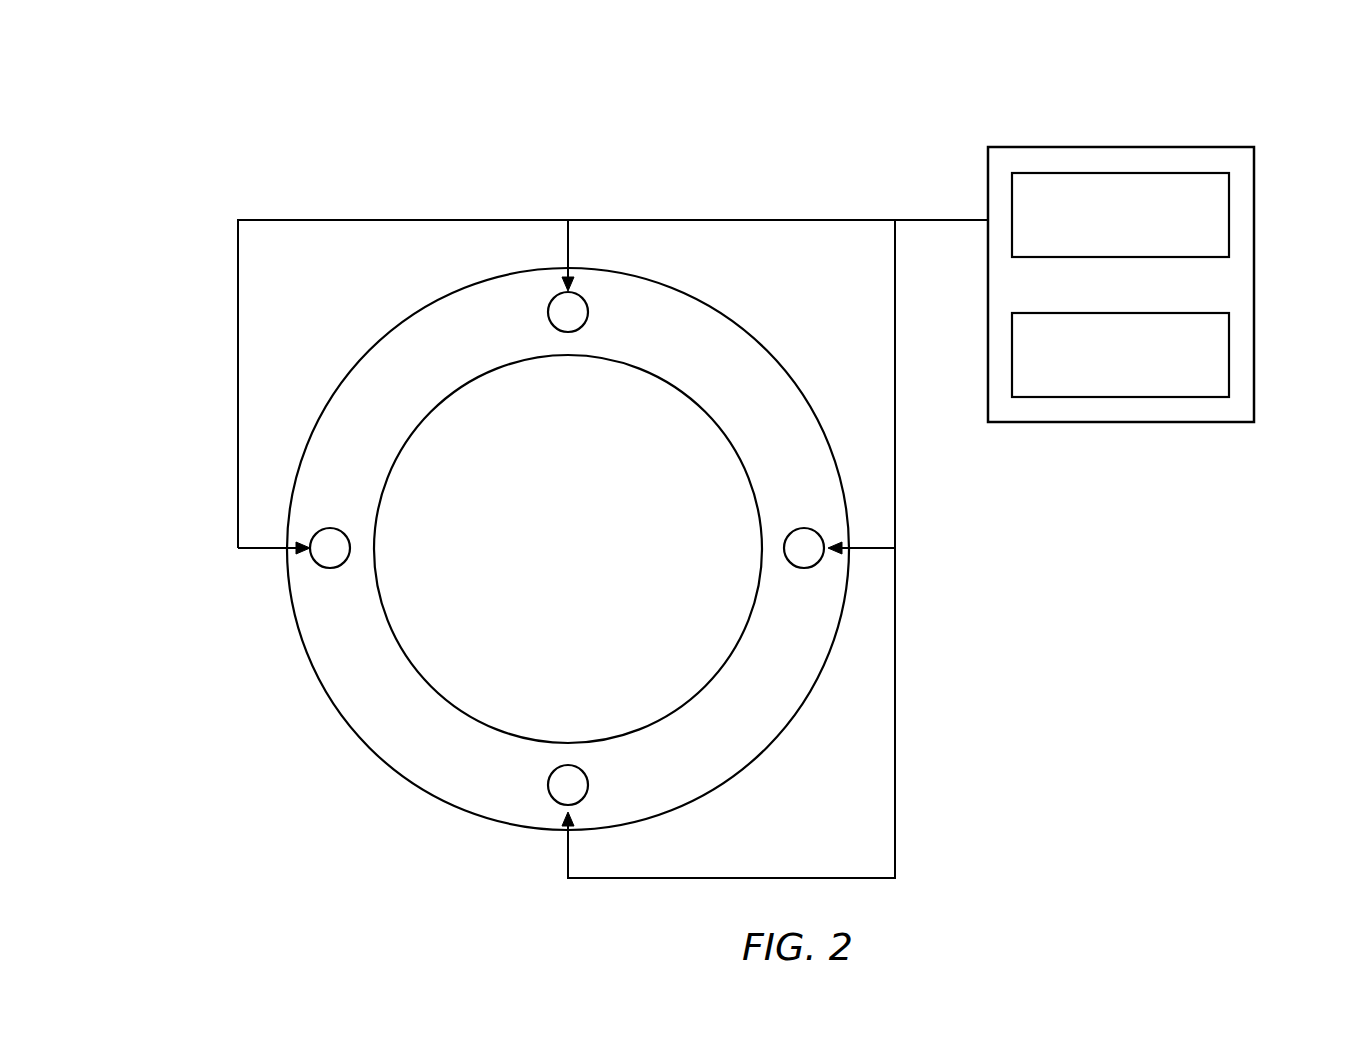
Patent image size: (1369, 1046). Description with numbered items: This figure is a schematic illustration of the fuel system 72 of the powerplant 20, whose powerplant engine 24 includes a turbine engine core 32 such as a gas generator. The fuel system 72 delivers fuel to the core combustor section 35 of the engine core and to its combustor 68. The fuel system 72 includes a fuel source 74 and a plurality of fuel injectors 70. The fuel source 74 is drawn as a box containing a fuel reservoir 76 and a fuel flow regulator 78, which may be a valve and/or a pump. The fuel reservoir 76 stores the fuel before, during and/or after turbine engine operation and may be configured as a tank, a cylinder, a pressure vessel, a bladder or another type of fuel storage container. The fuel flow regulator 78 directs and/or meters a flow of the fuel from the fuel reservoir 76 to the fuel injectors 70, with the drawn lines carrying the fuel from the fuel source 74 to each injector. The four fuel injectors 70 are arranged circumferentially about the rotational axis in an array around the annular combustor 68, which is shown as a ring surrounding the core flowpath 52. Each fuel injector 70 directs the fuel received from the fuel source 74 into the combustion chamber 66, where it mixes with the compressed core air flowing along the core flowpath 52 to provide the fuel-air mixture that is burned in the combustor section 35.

The powerplant 20 is at (590, 489).
The powerplant engine 24 is at (590, 489).
The turbine engine core 32 is at (590, 489).
The core combustor section 35 is at (740, 206).
The core flowpath 52 is at (568, 549).
The combustion chamber 66 is at (725, 400).
The combustor 68 is at (758, 323).
The fuel injectors 70 is at (589, 314).
The fuel system 72 is at (1168, 230).
The fuel source 74 is at (1255, 175).
The fuel reservoir 76 is at (1120, 355).
The fuel flow regulator 78 is at (1120, 215).